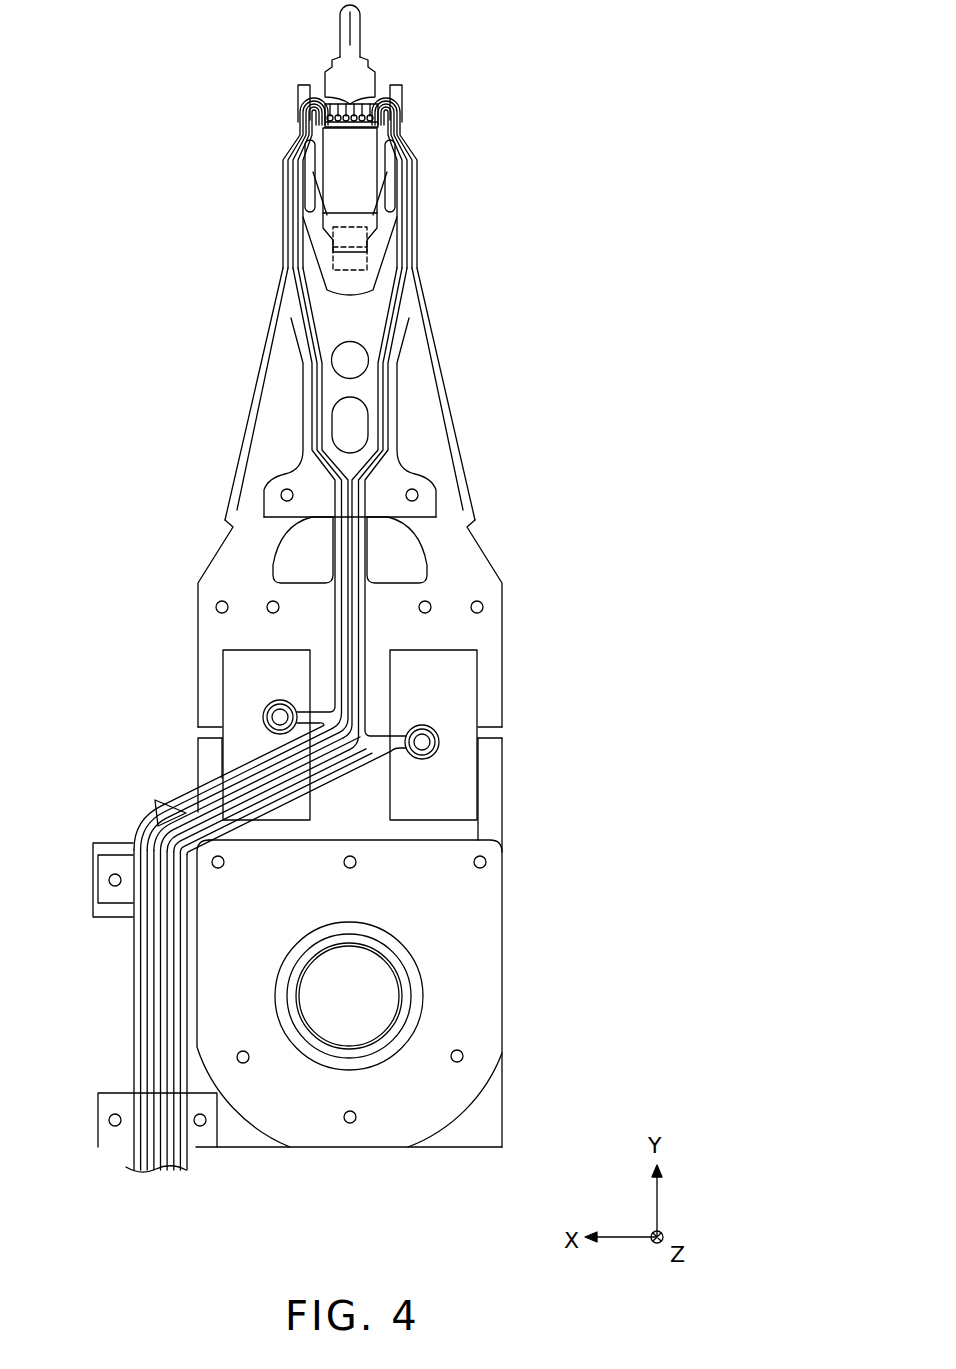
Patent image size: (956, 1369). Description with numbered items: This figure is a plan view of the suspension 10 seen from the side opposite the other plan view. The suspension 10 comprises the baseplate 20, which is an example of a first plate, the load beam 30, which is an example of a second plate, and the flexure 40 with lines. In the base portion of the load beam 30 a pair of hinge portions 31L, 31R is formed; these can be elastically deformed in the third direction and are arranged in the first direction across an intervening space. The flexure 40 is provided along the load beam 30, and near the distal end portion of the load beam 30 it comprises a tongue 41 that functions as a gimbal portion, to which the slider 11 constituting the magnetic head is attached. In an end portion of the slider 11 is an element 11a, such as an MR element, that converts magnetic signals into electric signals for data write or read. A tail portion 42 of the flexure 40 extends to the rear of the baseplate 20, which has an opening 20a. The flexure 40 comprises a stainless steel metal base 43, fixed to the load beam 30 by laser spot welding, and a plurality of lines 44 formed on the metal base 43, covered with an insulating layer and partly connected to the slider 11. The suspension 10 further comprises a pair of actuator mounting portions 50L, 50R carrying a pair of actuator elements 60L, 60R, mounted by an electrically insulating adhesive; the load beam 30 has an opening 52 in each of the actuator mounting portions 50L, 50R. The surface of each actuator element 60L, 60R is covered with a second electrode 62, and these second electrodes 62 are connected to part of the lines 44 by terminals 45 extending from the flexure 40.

The suspension 10 is at (513, 330).
The slider 11 is at (367, 157).
The element 11a is at (350, 136).
The baseplate 20 is at (465, 935).
The opening 20a is at (430, 985).
The load beam 30 is at (447, 402).
The hinge portion 31R is at (225, 557).
The hinge portion 31L is at (473, 557).
The flexure 40 is at (428, 185).
The tongue 41 is at (381, 218).
The tail portion 42 is at (133, 1000).
The metal base 43 is at (267, 485).
The lines 44 is at (270, 788).
The terminals 45 is at (278, 700).
The actuator mounting portion 50R is at (186, 738).
The actuator mounting portion 50L is at (514, 738).
The opening 52 is at (236, 764).
The actuator element 60R is at (242, 670).
The actuator element 60L is at (457, 670).
The second electrode 62 is at (235, 687).